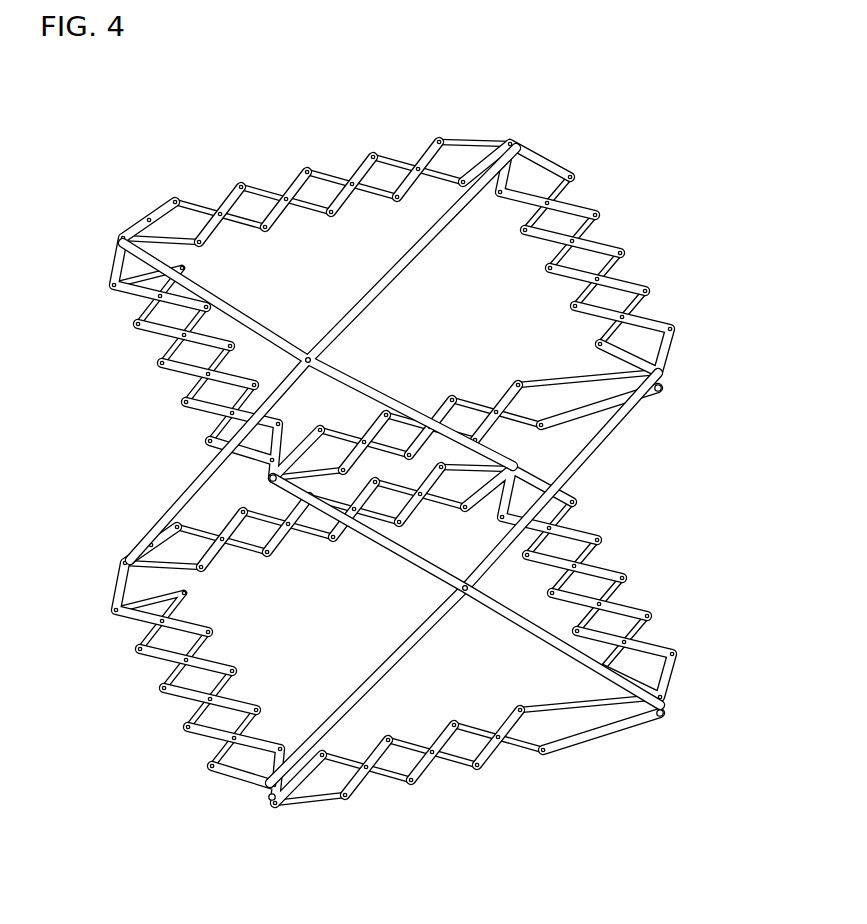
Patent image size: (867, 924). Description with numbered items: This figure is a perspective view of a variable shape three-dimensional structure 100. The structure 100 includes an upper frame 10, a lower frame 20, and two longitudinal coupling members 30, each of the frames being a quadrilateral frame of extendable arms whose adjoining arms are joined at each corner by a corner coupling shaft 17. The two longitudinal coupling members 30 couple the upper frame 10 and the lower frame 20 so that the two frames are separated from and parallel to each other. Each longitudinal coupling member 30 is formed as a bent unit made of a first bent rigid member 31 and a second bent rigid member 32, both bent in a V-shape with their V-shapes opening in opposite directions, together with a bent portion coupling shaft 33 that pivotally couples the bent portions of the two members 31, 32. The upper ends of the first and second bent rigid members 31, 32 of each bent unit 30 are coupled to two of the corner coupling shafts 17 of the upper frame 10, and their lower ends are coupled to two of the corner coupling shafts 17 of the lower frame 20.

The variable shape three-dimensional structure 100 is at (549, 118).
The upper frame 10 is at (107, 321).
The lower frame 20 is at (126, 684).
The corner coupling shaft 17 is at (662, 384).
The longitudinal coupling member 30 is at (391, 488).
The first bent rigid member 31 is at (536, 628).
The second bent rigid member 32 is at (383, 670).
The bent portion coupling shaft 33 is at (478, 602).